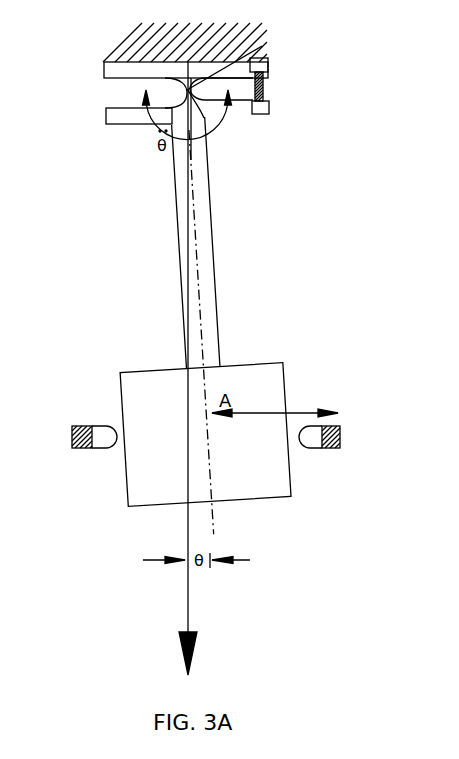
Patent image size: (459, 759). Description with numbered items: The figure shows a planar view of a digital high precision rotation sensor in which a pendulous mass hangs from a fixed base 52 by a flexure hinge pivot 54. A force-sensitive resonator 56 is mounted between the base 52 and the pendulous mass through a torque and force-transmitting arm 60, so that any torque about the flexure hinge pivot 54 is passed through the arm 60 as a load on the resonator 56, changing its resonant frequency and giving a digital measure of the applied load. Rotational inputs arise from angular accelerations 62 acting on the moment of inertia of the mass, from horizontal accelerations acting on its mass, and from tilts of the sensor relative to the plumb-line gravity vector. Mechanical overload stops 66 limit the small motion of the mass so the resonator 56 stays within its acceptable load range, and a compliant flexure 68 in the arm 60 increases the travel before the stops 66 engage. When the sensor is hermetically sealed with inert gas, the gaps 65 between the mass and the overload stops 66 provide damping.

The base 52 is at (106, 76).
The flexure hinge pivot 54 is at (262, 46).
The force-sensitive resonator 56 is at (262, 107).
The torque and force-transmitting arm 60 is at (242, 114).
The angular acceleration Θ̈ 62 is at (158, 152).
The gaps 65 is at (115, 425).
The mechanical overload stops 66 is at (97, 450).
The flexure 68 is at (213, 118).